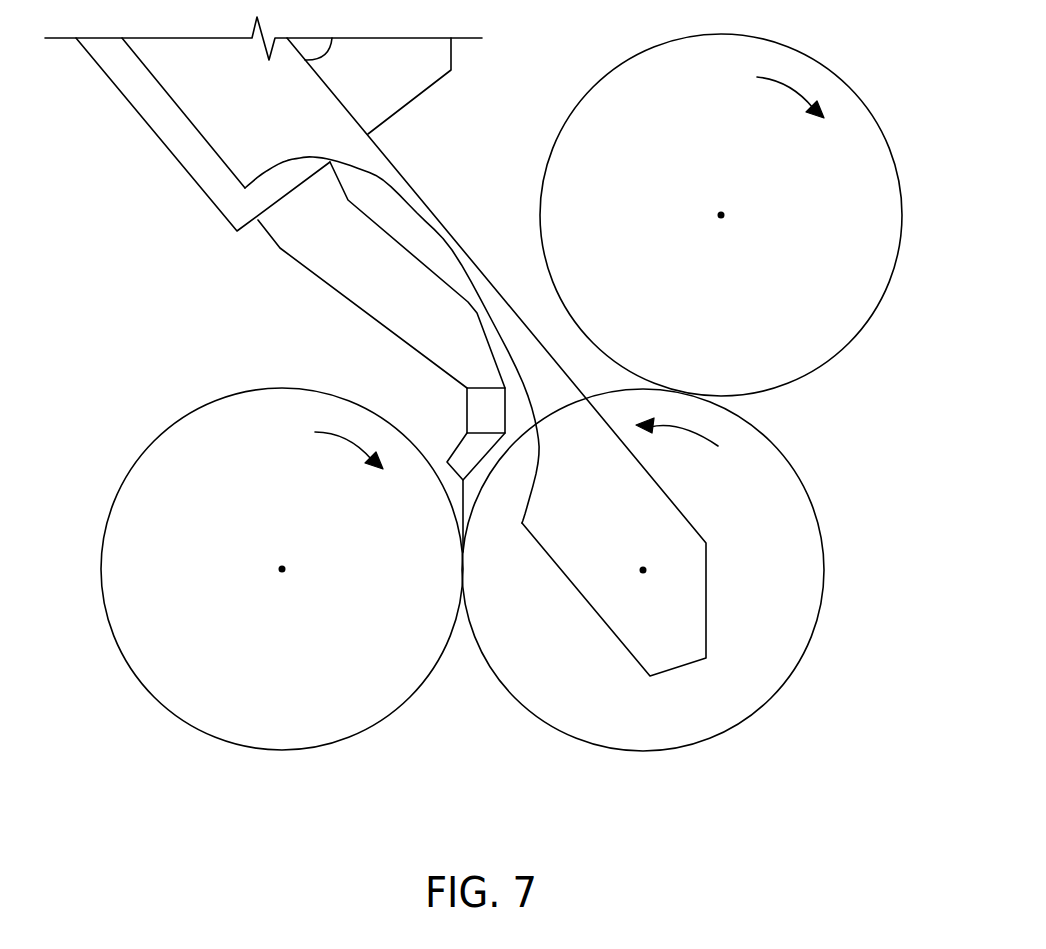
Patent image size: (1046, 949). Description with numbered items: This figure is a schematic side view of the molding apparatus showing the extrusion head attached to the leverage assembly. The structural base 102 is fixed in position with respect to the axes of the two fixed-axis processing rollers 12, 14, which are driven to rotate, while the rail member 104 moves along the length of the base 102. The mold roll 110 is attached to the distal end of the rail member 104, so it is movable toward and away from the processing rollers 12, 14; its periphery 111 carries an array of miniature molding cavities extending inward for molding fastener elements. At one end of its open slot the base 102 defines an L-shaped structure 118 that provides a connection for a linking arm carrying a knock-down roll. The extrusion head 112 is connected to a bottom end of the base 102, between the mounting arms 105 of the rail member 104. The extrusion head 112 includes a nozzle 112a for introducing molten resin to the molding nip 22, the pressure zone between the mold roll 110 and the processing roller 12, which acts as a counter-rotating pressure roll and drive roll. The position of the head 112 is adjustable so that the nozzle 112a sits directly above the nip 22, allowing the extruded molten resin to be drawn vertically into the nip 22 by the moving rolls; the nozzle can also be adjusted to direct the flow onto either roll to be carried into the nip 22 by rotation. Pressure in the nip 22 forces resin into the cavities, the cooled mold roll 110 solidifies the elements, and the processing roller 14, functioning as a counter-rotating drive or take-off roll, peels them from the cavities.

The processing roller 12 is at (157, 678).
The processing roller 14 is at (878, 159).
The molding nip 22 is at (462, 667).
The structural base 102 is at (135, 91).
The rail member 104 is at (242, 130).
The mounting arms 105 is at (388, 176).
The mold roll 110 is at (792, 637).
The periphery 111 is at (650, 751).
The extrusion head 112 is at (335, 275).
The nozzle 112a is at (455, 450).
The L-shaped structure 118 is at (422, 79).